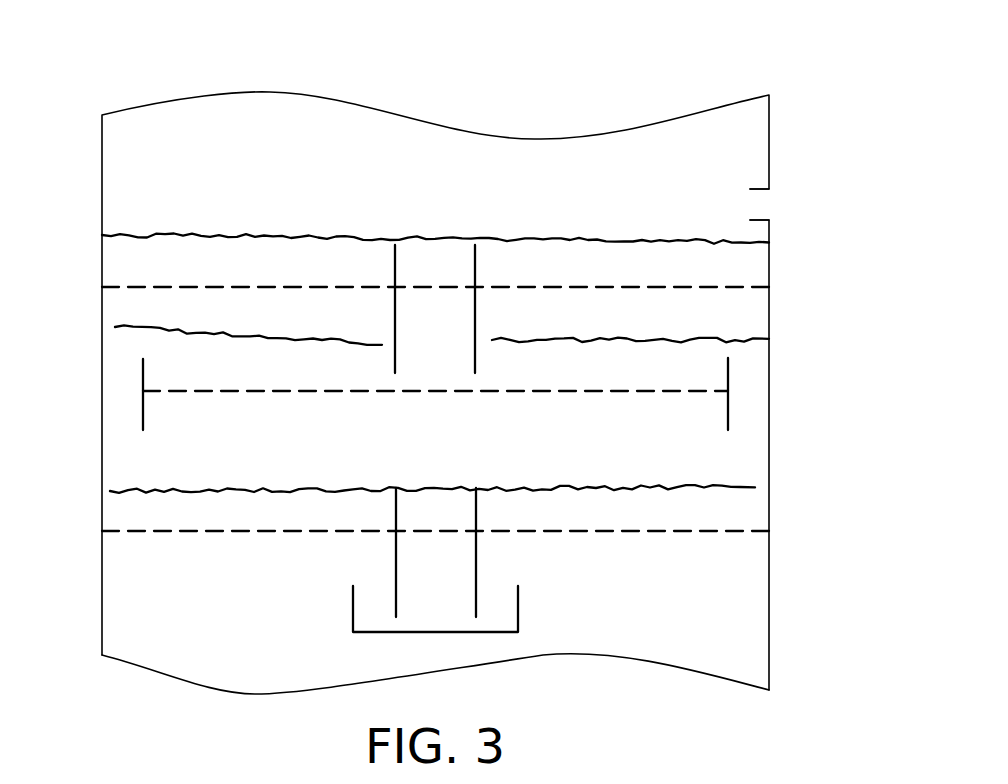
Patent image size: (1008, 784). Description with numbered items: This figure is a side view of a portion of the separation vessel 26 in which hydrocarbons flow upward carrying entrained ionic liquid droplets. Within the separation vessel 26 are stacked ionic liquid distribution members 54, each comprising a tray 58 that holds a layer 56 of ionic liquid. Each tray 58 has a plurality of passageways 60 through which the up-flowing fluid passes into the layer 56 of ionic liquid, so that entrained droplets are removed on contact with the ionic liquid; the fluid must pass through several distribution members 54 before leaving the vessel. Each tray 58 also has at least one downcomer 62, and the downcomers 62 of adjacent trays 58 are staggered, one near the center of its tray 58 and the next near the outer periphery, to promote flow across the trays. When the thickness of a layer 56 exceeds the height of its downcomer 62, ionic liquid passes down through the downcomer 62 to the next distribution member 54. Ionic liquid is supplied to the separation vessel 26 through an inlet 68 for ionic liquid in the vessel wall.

The separation vessel 26 is at (102, 155).
The ionic liquid distribution member 54 is at (715, 288).
The layer of ionic liquid 56 is at (127, 259).
The tray 58 is at (135, 287).
The passageway 60 is at (250, 287).
The downcomer 62 is at (448, 280).
The inlet for ionic liquid 68 is at (763, 206).